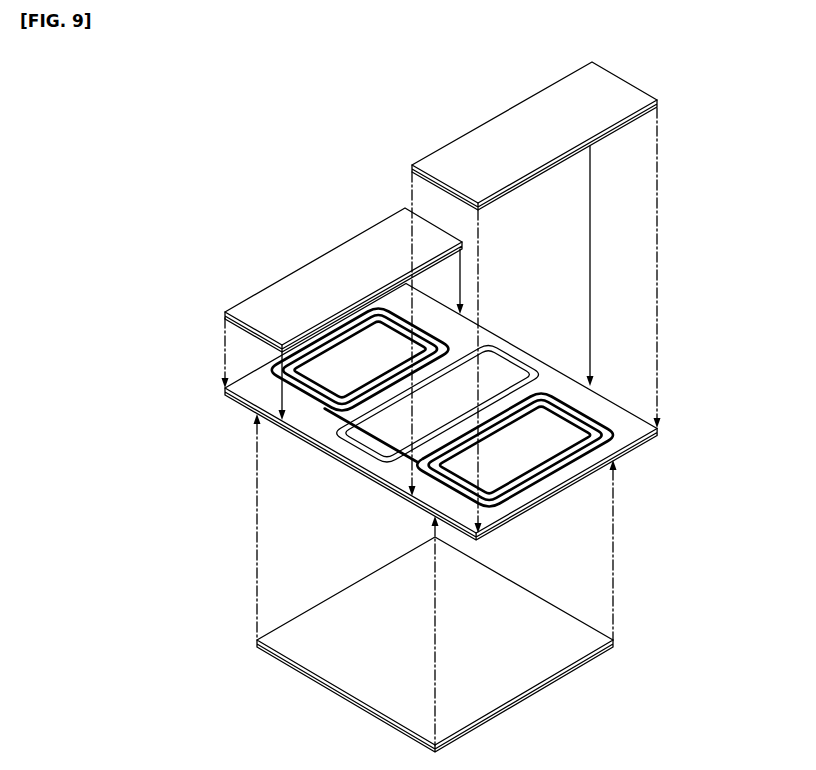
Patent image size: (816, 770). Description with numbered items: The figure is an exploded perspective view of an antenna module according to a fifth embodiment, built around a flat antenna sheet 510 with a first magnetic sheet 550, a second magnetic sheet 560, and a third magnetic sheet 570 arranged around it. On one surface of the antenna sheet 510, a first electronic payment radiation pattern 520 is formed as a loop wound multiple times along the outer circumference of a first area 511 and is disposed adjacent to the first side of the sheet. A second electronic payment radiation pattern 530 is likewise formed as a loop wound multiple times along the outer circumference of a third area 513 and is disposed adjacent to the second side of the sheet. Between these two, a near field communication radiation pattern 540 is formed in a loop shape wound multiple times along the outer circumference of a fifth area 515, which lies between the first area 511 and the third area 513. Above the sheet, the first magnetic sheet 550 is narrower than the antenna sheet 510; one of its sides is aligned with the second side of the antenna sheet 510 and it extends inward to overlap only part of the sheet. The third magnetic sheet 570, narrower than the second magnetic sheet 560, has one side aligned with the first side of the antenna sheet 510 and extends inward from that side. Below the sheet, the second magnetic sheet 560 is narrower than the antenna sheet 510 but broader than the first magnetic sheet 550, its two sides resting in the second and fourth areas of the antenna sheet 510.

The antenna sheet 510 is at (485, 347).
The first area 511 is at (520, 459).
The third area 513 is at (346, 358).
The fifth area 515 is at (443, 412).
The first electronic payment radiation pattern 520 is at (583, 412).
The second electronic payment radiation pattern 530 is at (413, 338).
The near field communication radiation pattern 540 is at (517, 357).
The first magnetic sheet 550 is at (317, 272).
The second magnetic sheet 560 is at (573, 627).
The third magnetic sheet 570 is at (502, 120).